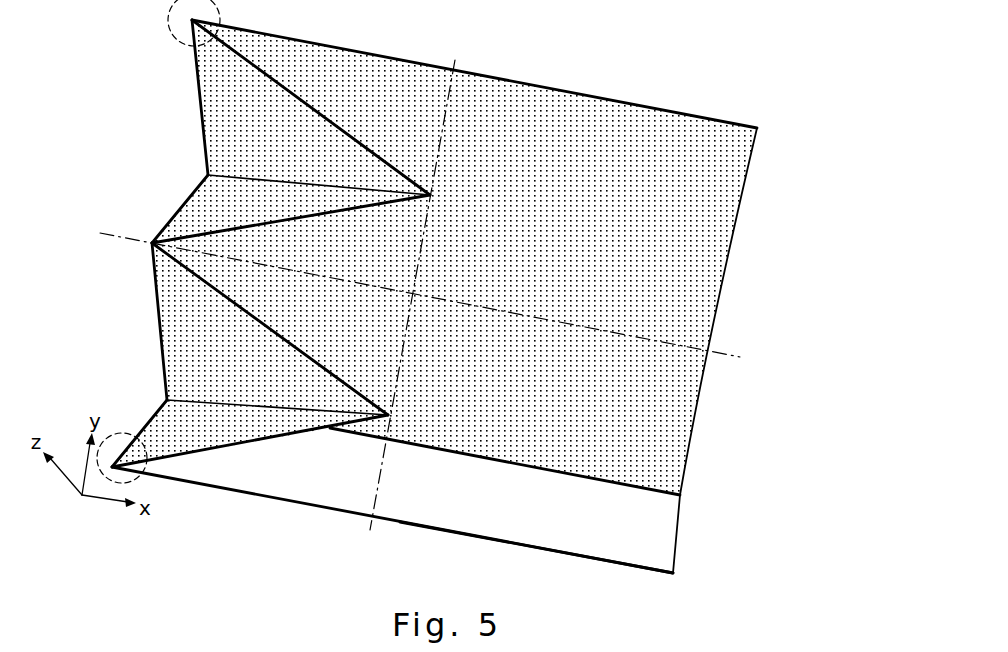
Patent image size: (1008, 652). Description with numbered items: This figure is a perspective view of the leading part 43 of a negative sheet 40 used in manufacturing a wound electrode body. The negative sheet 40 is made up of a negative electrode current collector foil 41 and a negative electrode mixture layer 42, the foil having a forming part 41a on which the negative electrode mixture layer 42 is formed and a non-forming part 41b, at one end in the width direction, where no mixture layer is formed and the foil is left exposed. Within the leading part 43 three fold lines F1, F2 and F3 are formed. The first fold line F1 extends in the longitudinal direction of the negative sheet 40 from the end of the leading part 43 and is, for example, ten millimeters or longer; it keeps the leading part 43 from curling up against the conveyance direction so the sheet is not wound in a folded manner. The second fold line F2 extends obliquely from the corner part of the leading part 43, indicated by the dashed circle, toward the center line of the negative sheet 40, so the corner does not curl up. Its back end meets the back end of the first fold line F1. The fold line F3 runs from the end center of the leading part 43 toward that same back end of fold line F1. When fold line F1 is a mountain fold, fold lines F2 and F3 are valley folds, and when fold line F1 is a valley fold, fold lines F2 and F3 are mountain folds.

The negative sheet 40 is at (703, 100).
The negative electrode current collector foil 41 is at (753, 463).
The forming part 41a is at (680, 468).
The non-forming part 41b is at (674, 543).
The negative electrode mixture layer 42 is at (731, 283).
The leading part 43 is at (453, 70).
The first fold line F1 is at (235, 176).
The second fold line F2 is at (363, 143).
The fold line F3 is at (357, 208).